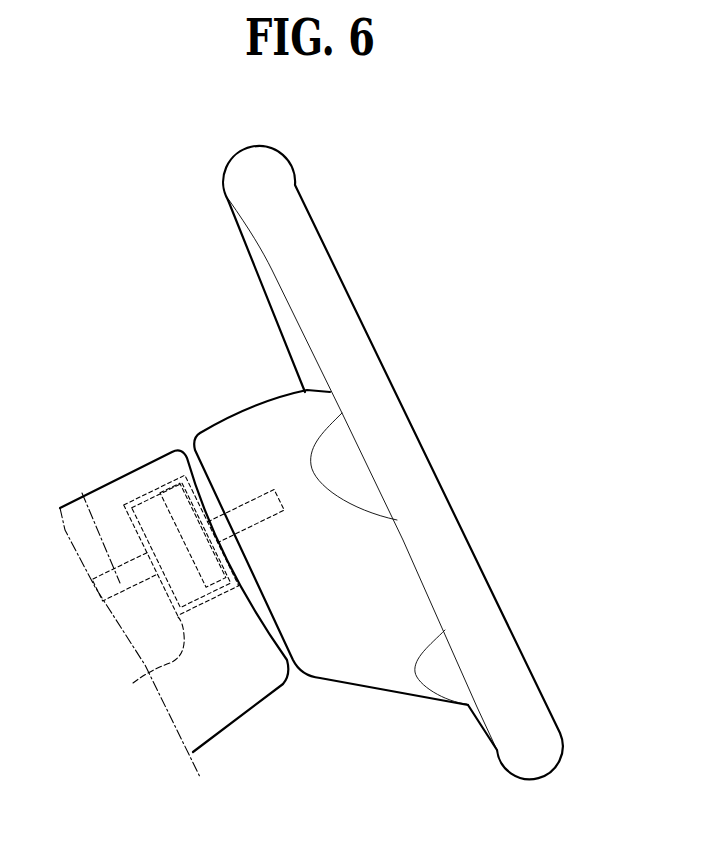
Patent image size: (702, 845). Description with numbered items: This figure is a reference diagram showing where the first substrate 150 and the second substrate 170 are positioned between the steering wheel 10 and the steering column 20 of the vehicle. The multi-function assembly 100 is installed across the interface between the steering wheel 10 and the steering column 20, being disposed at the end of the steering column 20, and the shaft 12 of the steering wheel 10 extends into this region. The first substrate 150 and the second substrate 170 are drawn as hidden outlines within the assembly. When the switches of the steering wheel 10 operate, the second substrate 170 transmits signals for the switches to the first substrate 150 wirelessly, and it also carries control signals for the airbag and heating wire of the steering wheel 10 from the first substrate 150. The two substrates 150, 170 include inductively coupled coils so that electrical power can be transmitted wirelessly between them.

The steering wheel 10 is at (340, 307).
The steering column 20 is at (243, 713).
The shaft 12 is at (77, 492).
The multi-function assembly 100 is at (133, 683).
The first substrate 150 is at (143, 500).
The second substrate 170 is at (177, 490).